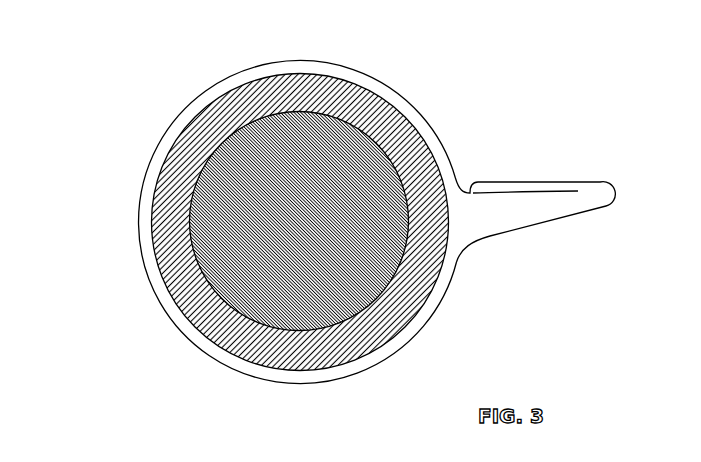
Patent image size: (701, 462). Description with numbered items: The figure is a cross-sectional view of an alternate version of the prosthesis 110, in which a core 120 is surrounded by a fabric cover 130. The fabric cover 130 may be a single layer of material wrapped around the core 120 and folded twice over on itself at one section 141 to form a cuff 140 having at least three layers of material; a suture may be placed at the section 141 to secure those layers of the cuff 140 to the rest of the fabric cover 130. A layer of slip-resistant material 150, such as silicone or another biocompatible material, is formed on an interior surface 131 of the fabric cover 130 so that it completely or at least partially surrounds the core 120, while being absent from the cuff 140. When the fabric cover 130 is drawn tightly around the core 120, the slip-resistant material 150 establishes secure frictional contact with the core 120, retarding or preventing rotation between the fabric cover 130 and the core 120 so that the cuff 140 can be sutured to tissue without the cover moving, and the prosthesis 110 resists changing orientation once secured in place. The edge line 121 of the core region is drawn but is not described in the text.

The prosthesis 110 is at (348, 212).
The core 120 is at (256, 178).
The edge of bottom surface 121 is at (342, 120).
The fabric cover 130 is at (262, 223).
The interior surface 131 is at (157, 251).
The cuff 140 is at (542, 208).
The section 141 is at (525, 182).
The slip-resistant material 150 is at (237, 343).